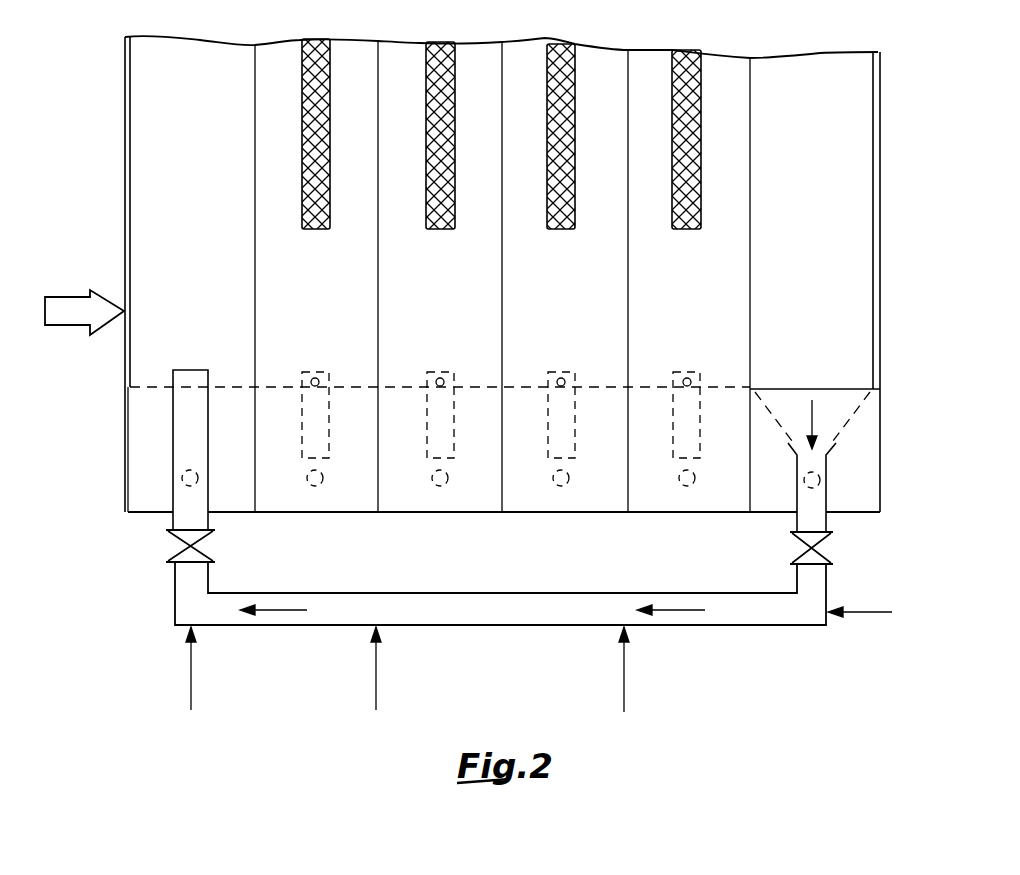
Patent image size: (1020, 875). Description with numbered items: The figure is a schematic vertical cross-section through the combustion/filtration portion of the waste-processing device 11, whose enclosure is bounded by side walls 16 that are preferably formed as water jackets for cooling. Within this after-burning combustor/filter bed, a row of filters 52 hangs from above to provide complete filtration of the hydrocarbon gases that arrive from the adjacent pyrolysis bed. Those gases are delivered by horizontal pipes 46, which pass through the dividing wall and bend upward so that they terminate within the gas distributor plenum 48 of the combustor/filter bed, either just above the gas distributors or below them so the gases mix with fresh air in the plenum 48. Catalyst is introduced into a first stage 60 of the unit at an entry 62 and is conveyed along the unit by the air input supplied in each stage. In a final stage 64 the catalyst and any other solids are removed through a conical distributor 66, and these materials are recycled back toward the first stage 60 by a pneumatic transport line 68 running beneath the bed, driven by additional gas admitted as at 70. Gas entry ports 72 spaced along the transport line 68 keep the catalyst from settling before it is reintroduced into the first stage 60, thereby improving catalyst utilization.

The device 11 is at (132, 546).
The side walls 16 is at (880, 243).
The horizontal pipes 46 is at (307, 487).
The gas distributor plenum 48 is at (148, 460).
The filters 52 is at (330, 190).
The first stage 60 is at (143, 235).
The entry 62 is at (62, 326).
The final stage 64 is at (847, 327).
The conical distributor 66 is at (845, 428).
The pneumatic transport line 68 is at (766, 630).
The additional gas 70 is at (847, 610).
The gas entry ports 72 is at (627, 690).